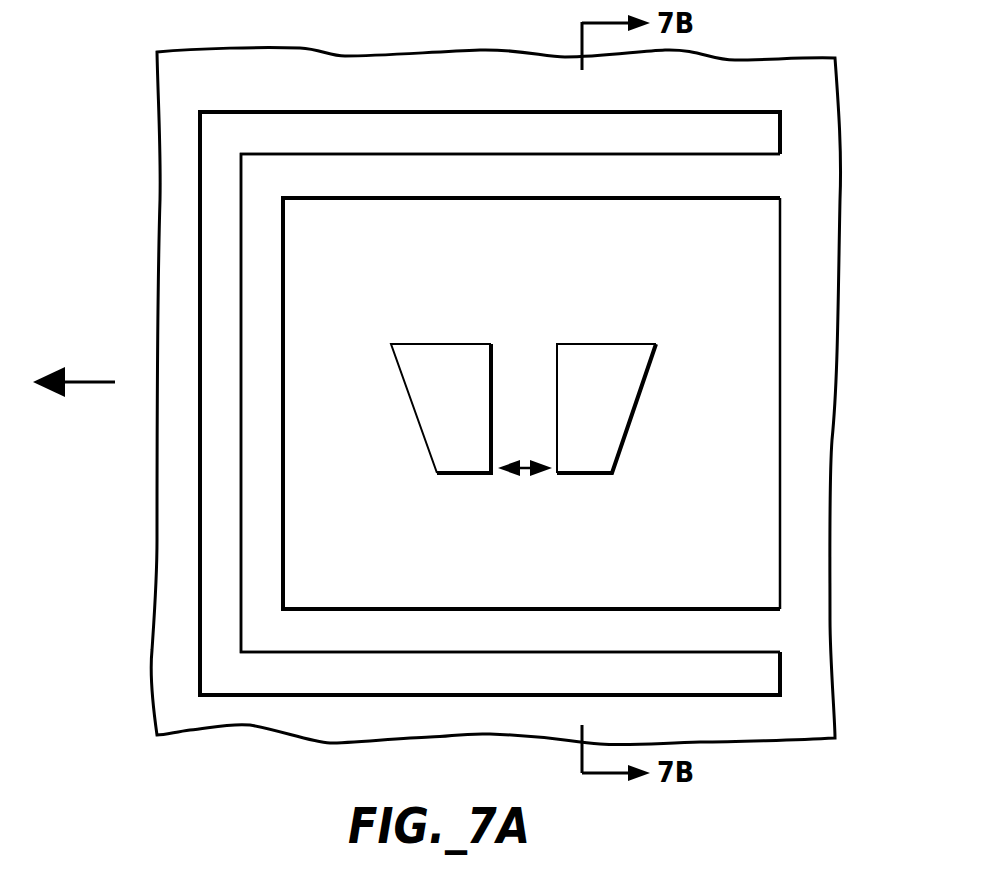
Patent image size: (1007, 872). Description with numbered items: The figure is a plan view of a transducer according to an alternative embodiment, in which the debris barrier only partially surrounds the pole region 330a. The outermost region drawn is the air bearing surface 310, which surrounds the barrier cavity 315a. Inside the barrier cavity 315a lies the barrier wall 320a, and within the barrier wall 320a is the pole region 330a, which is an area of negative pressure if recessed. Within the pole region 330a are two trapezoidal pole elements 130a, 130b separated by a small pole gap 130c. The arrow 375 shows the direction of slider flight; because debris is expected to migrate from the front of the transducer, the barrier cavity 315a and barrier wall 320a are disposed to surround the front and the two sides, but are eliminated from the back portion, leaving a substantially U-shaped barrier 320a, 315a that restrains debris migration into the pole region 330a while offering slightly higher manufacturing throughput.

The air bearing surface 310 is at (180, 157).
The barrier cavity 315a is at (220, 453).
The barrier wall 320a is at (258, 509).
The pole region 330a is at (313, 570).
The pole element 130a is at (437, 438).
The pole element 130b is at (608, 439).
The pole gap 130c is at (524, 471).
The arrow 375 is at (103, 381).